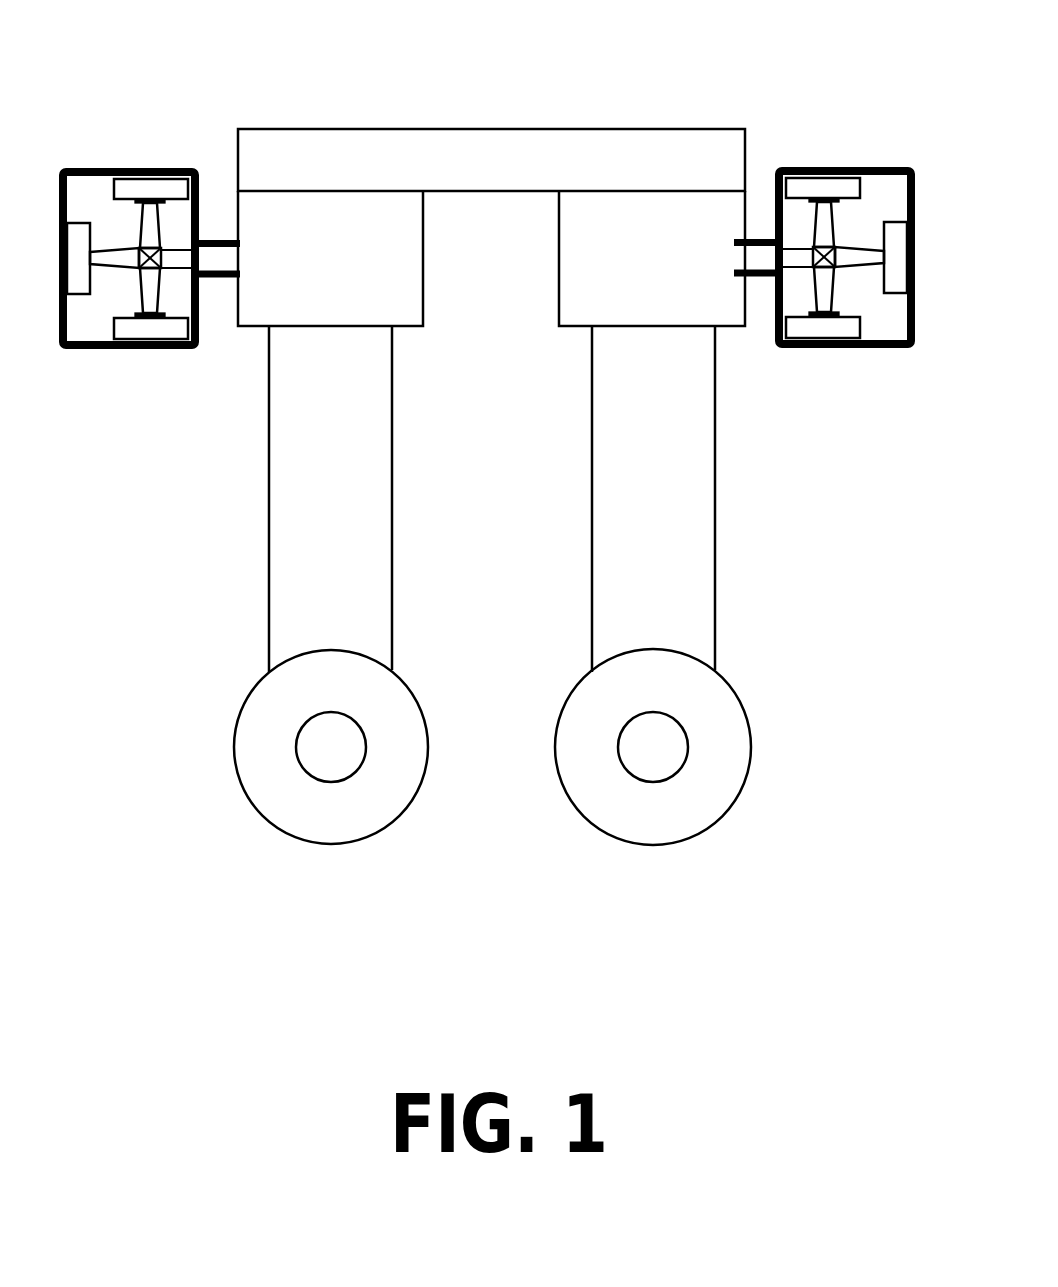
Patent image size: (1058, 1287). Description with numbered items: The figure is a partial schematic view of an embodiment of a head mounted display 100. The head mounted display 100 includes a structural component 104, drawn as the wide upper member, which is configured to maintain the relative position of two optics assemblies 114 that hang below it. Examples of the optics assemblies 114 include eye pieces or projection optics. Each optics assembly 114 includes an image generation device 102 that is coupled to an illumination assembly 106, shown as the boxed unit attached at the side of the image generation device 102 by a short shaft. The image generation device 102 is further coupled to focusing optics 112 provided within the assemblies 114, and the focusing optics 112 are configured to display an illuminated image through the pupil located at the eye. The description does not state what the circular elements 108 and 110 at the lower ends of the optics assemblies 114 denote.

The head mounted display 100 is at (776, 55).
The image generation device 102 is at (412, 312).
The structural component 104 is at (468, 145).
The illumination assembly 106 is at (802, 166).
The wheel 108 is at (742, 702).
The axle / hub 110 is at (660, 745).
The focusing optics 112 is at (382, 482).
The optics assembly 114 is at (268, 420).